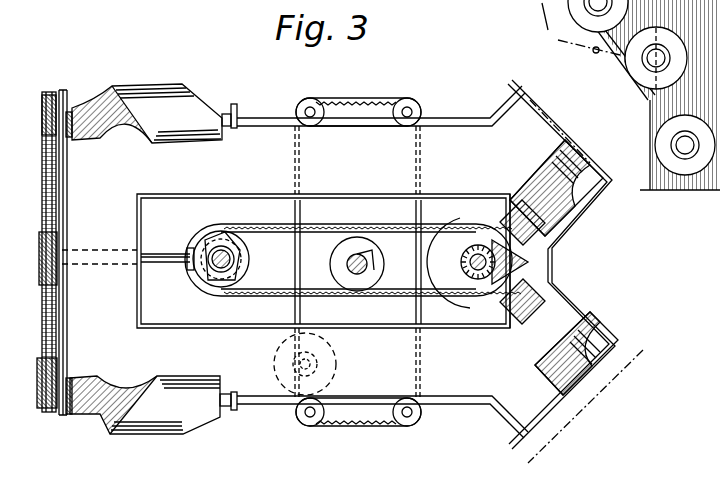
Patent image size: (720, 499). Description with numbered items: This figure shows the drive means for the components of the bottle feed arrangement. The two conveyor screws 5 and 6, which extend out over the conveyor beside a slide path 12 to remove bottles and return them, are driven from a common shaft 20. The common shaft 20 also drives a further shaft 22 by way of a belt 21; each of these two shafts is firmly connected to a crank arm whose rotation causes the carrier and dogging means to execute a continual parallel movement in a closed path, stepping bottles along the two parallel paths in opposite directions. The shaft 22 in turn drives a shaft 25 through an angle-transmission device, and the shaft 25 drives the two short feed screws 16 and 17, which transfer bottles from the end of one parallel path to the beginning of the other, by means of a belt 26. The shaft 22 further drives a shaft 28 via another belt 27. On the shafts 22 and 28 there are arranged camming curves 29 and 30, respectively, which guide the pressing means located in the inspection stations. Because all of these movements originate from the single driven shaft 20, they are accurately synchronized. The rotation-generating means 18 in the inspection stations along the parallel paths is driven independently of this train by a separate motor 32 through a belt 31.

The conveyor screw 5 is at (577, 203).
The conveyor screw 6 is at (562, 328).
The slide path 12 is at (605, 52).
The short feed screw 16 is at (148, 96).
The short feed screw 17 is at (180, 414).
The rotation-generating means 18 is at (307, 100).
The common shaft 20 is at (462, 252).
The belt 21 is at (333, 225).
The shaft 22 is at (208, 289).
The shaft 25 is at (150, 262).
The belt 26 is at (67, 337).
The belt 27 is at (265, 299).
The shaft 28 is at (372, 266).
The camming curve 29 is at (210, 242).
The camming curve 30 is at (370, 254).
The belt 31 is at (360, 99).
The motor 32 is at (320, 360).